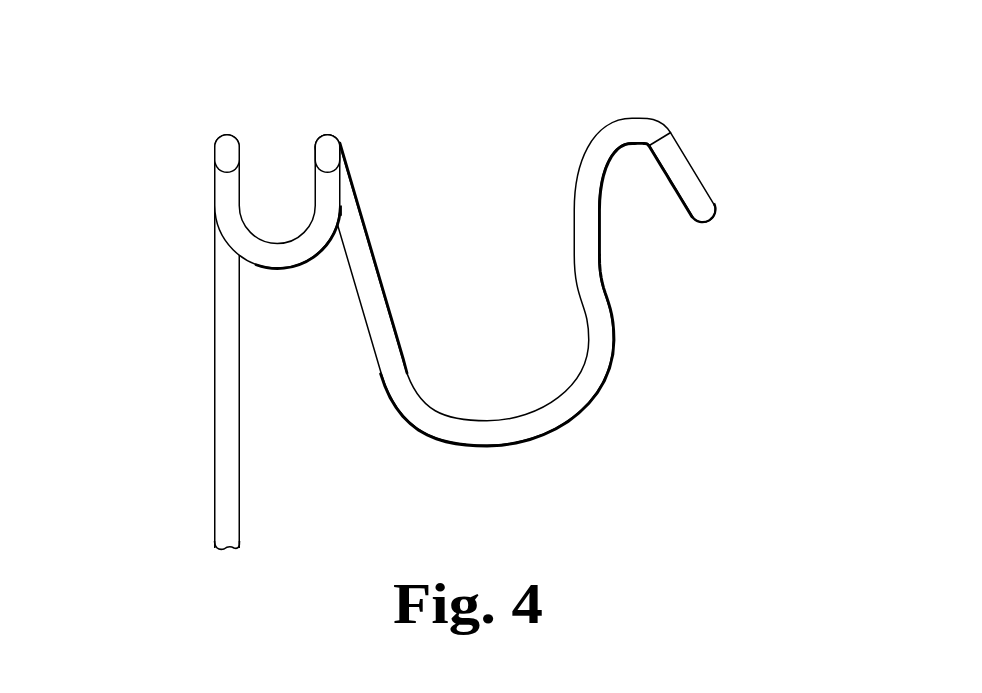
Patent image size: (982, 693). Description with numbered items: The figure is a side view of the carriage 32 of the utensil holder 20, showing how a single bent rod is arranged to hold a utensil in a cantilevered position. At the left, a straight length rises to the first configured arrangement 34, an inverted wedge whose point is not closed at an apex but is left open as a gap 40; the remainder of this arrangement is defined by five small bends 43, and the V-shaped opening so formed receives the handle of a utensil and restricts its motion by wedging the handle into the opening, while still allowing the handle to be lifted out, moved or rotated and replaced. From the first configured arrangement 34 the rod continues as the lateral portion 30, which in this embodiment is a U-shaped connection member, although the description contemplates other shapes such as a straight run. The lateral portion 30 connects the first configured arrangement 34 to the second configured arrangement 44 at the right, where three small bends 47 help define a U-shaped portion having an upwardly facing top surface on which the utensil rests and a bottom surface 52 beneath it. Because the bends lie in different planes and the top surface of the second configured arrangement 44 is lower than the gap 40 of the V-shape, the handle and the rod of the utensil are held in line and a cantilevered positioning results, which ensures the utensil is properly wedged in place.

The utensil holder 20 is at (645, 51).
The lateral portion 30 is at (508, 441).
The carriage 32 is at (168, 137).
The first configured arrangement 34 is at (320, 267).
The gap 40 is at (291, 178).
The small bends 43 is at (230, 132).
The second configured arrangement 44 is at (680, 115).
The small bends 47 is at (693, 215).
The bottom surface 52 is at (703, 212).